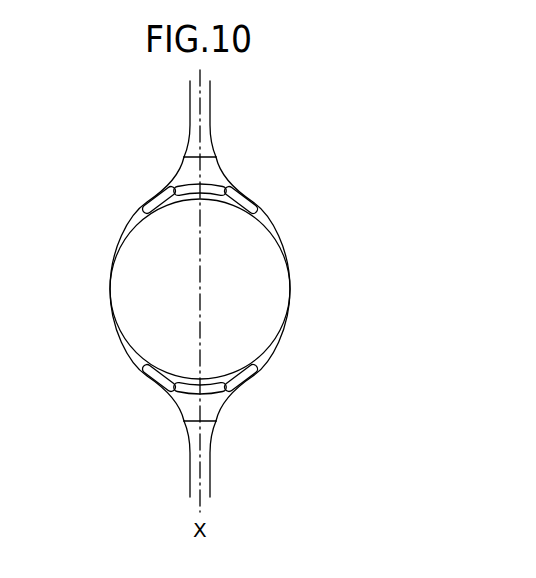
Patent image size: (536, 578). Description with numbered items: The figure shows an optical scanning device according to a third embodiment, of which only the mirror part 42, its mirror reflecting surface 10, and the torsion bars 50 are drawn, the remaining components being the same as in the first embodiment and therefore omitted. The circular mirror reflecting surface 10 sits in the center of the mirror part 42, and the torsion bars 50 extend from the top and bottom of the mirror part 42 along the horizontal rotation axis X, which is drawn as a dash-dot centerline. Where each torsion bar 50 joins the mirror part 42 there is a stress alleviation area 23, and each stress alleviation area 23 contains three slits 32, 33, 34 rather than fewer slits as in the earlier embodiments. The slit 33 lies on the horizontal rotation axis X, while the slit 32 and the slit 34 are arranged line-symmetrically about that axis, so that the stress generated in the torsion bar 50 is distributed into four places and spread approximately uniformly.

The mirror reflecting surface 10 is at (262, 287).
The stress alleviation area 23 is at (210, 170).
The slit 32 is at (155, 200).
The slit 33 is at (188, 185).
The slit 34 is at (247, 191).
The mirror part 42 is at (360, 196).
The torsion bar 50 is at (203, 471).